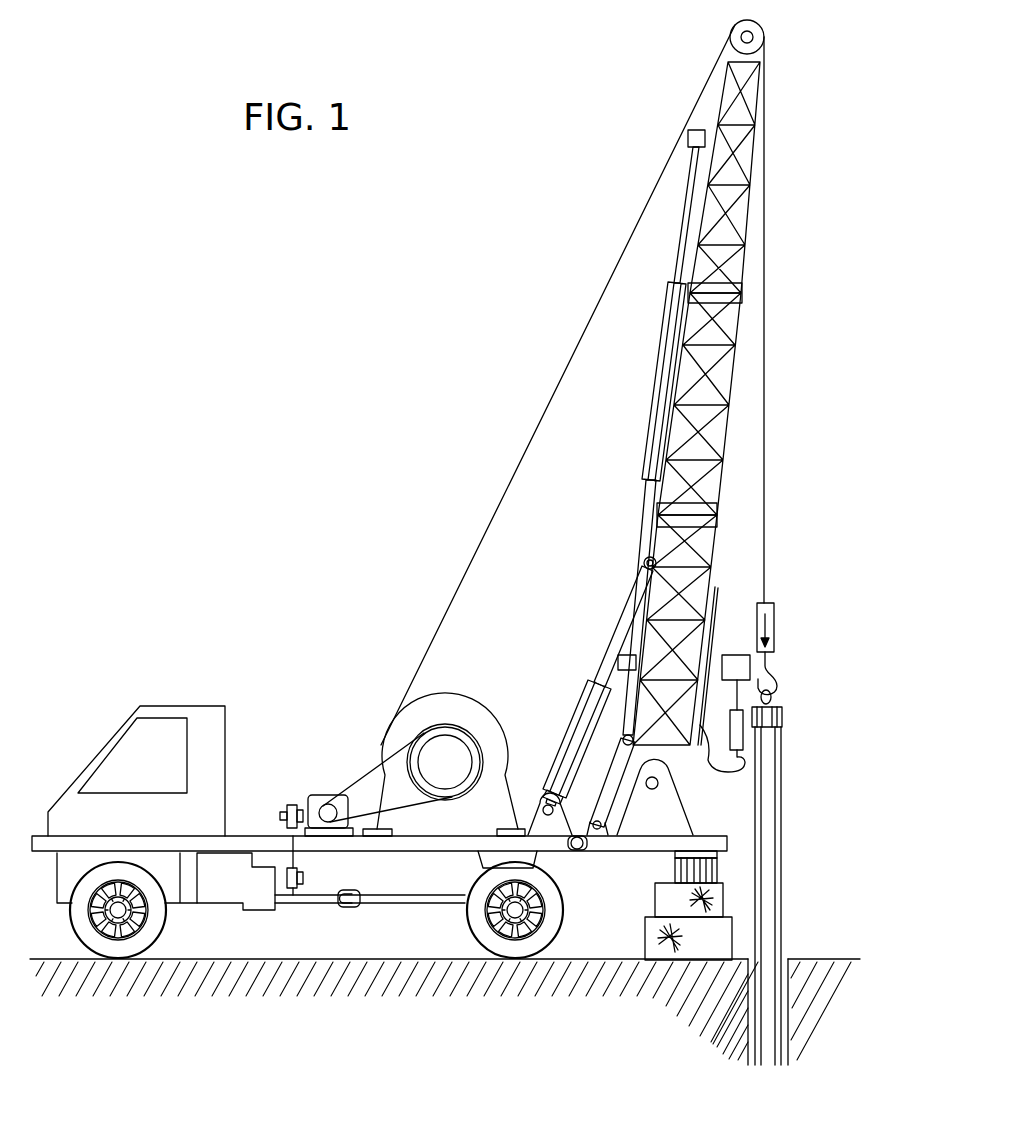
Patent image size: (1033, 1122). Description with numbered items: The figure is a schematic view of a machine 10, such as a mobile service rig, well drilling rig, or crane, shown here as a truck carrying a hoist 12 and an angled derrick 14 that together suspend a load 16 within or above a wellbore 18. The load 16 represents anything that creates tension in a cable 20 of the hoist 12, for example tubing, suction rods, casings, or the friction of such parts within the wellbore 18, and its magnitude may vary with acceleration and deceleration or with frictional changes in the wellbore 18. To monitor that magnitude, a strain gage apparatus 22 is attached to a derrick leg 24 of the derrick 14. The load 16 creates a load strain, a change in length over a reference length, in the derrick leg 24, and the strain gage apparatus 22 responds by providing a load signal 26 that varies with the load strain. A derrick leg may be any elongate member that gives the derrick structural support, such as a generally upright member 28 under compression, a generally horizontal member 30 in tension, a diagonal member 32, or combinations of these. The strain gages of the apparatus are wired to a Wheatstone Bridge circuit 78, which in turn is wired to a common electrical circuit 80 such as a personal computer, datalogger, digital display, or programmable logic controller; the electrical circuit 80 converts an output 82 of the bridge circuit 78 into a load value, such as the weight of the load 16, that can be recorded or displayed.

The machine 10 is at (299, 427).
The hoist 12 is at (463, 698).
The derrick 14 is at (747, 272).
The load 16 is at (779, 822).
The wellbore 18 is at (790, 935).
The cable 20 is at (617, 262).
The strain gage apparatus 22 is at (715, 603).
The derrick leg 24 is at (720, 577).
The load signal 26 is at (712, 762).
The generally upright member 28 is at (733, 385).
The generally horizontal member 30 is at (713, 345).
The diagonal member 32 is at (745, 163).
The Wheatstone Bridge circuit 78 is at (745, 760).
The electrical circuit 80 is at (735, 655).
The output 82 is at (733, 695).